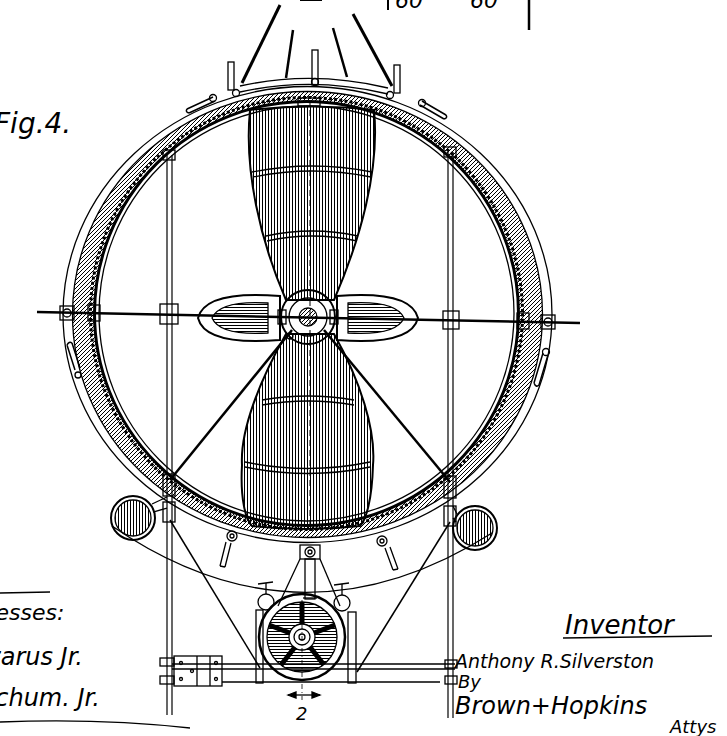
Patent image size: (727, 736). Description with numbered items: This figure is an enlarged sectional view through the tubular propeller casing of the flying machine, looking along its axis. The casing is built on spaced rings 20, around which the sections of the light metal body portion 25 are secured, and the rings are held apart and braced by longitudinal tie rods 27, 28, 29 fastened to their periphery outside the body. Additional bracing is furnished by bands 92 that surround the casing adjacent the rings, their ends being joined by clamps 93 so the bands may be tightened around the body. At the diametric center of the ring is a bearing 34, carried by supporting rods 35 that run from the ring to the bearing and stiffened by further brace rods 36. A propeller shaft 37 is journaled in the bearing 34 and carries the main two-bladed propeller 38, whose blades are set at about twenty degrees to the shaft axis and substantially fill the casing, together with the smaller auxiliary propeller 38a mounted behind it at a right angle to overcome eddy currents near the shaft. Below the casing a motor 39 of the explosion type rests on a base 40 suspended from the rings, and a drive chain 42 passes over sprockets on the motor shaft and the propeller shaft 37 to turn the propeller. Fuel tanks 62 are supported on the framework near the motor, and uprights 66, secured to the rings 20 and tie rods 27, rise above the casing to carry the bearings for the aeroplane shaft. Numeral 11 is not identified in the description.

The spaced rings 20 is at (512, 249).
The body portion 25 is at (535, 249).
The tie rod 27 is at (312, 80).
The tie rod 28 is at (556, 320).
The tie rod 29 is at (230, 530).
The bearing 34 is at (330, 303).
The supporting rods 35 is at (234, 403).
The brace rods 36 is at (200, 245).
The propeller shaft 37 is at (284, 341).
The propeller 38 is at (266, 215).
The auxiliary propeller 38a is at (372, 340).
The motor 39 is at (336, 655).
The base 40 is at (379, 672).
The drive chain 42 is at (292, 556).
The tanks 62 is at (112, 520).
The uprights 66 is at (338, 36).
The tie rods or bands 92 is at (106, 193).
The clamps 93 is at (212, 100).
The envelope 11 is at (166, 580).